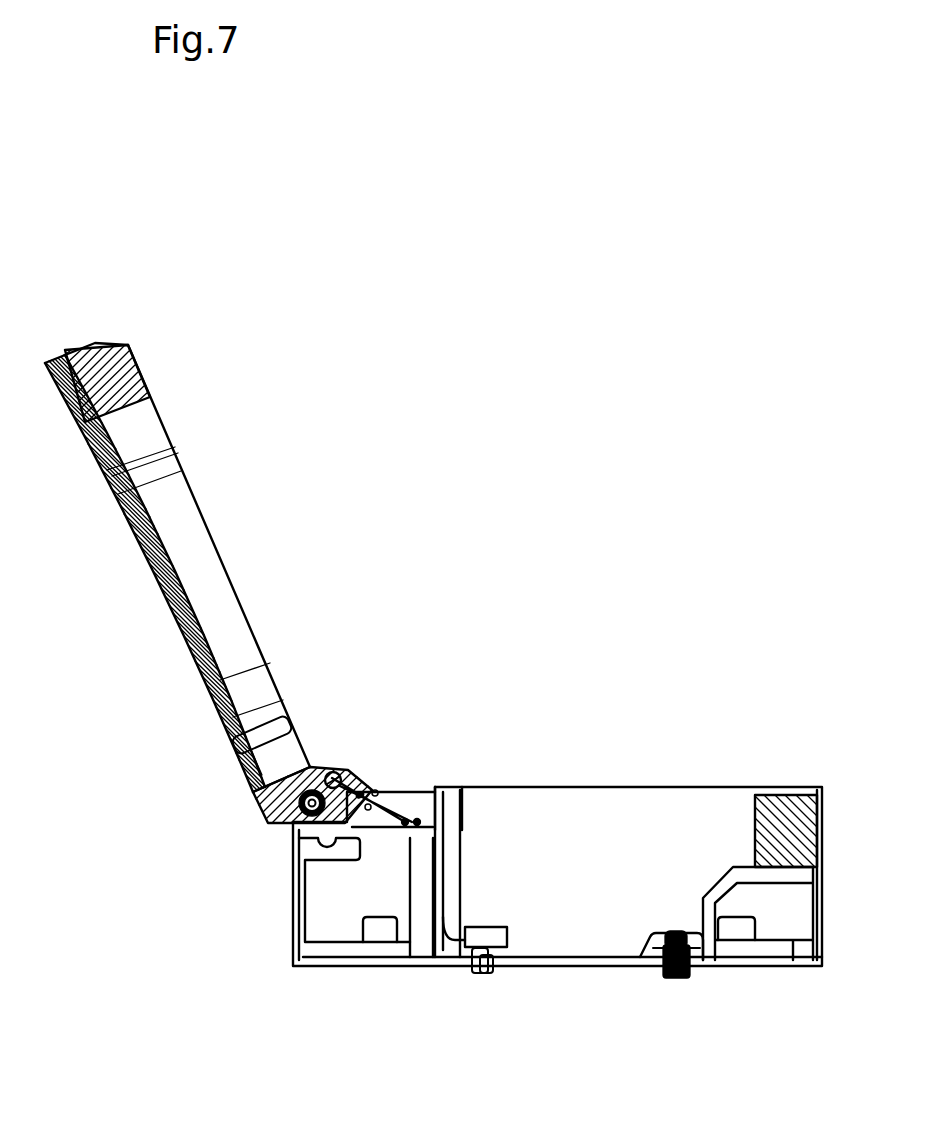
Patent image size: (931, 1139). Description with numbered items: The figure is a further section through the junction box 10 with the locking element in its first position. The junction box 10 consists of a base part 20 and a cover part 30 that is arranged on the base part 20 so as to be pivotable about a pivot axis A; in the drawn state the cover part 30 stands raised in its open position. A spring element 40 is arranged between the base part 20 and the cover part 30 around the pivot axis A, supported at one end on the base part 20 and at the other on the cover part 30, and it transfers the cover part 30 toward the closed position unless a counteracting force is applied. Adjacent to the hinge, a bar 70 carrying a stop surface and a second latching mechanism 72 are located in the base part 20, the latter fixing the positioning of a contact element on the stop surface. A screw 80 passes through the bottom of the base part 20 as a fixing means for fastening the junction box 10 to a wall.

The junction box 10 is at (470, 495).
The base part 20 is at (821, 905).
The cover part 30 is at (143, 547).
The spring element 40 is at (315, 773).
The pivot axis A is at (330, 772).
The bar 70 is at (438, 792).
The second latching mechanism 72 is at (412, 823).
The screw 80 is at (673, 985).